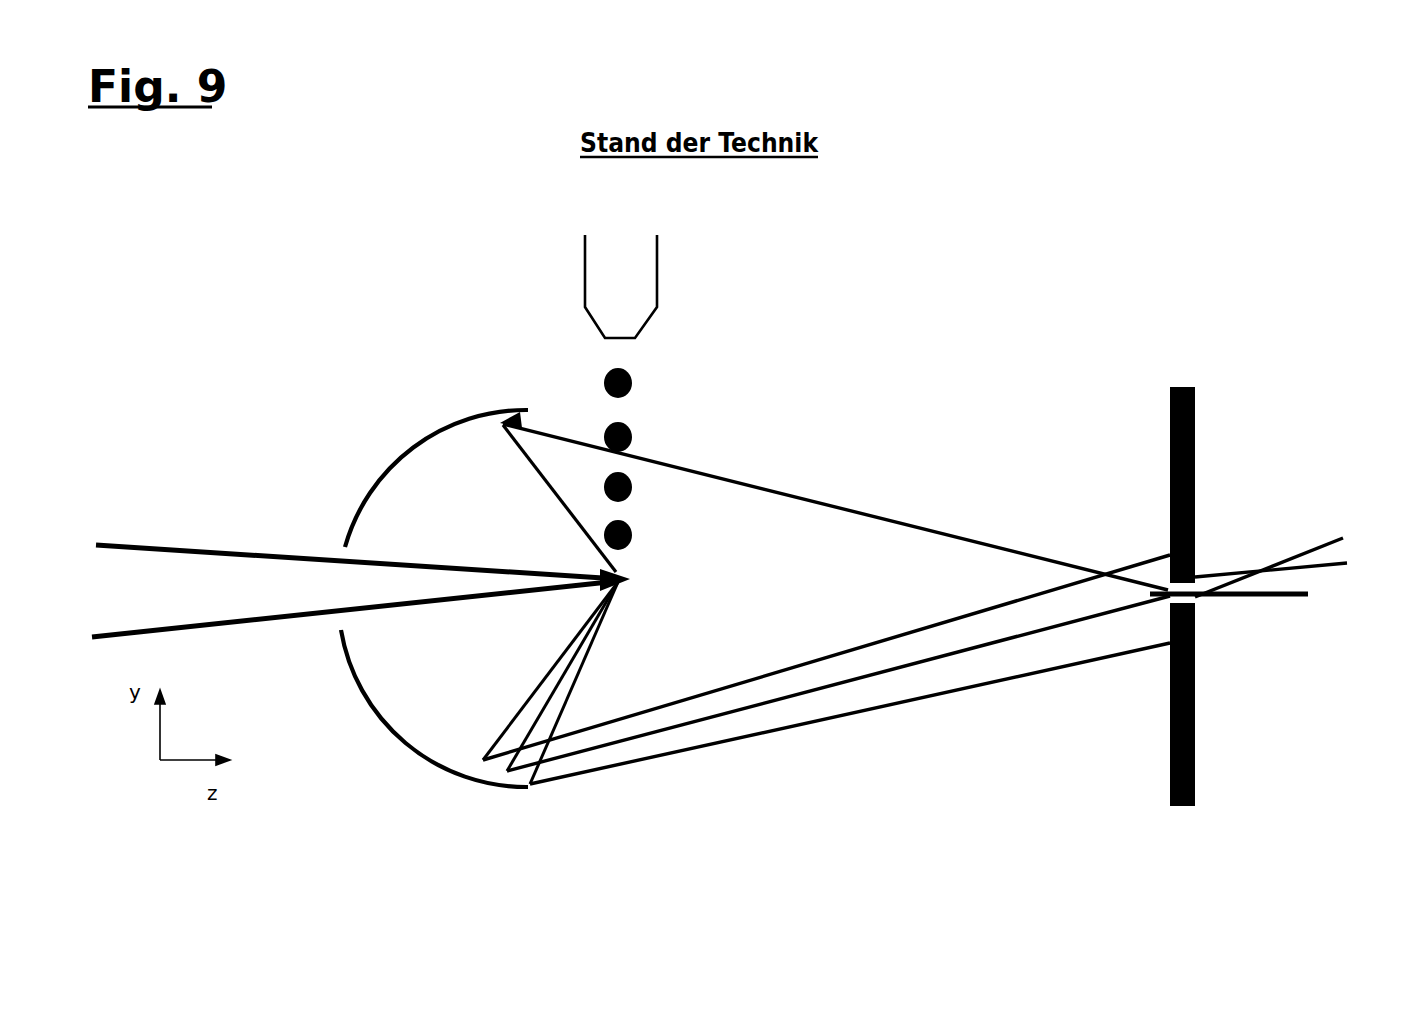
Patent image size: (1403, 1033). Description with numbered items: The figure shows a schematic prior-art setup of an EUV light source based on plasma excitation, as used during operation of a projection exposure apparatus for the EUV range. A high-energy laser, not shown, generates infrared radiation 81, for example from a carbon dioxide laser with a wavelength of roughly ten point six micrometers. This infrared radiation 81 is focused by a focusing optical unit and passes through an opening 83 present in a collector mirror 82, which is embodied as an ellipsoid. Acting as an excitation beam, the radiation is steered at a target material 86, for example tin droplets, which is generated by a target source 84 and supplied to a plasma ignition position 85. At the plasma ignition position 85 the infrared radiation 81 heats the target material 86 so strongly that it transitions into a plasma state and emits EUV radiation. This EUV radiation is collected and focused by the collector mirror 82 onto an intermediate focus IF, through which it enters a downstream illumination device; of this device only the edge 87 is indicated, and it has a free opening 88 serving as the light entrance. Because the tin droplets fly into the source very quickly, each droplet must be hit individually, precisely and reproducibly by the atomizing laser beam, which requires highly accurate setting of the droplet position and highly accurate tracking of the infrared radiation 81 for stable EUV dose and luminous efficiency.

The infrared radiation 81 is at (168, 612).
The collector mirror 82 is at (408, 465).
The opening 83 is at (305, 560).
The target source 84 is at (657, 262).
The plasma ignition position 85 is at (662, 585).
The target material 86 is at (665, 377).
The edge 87 is at (1168, 428).
The free opening 88 is at (1158, 582).
The intermediate focus IF is at (1160, 620).